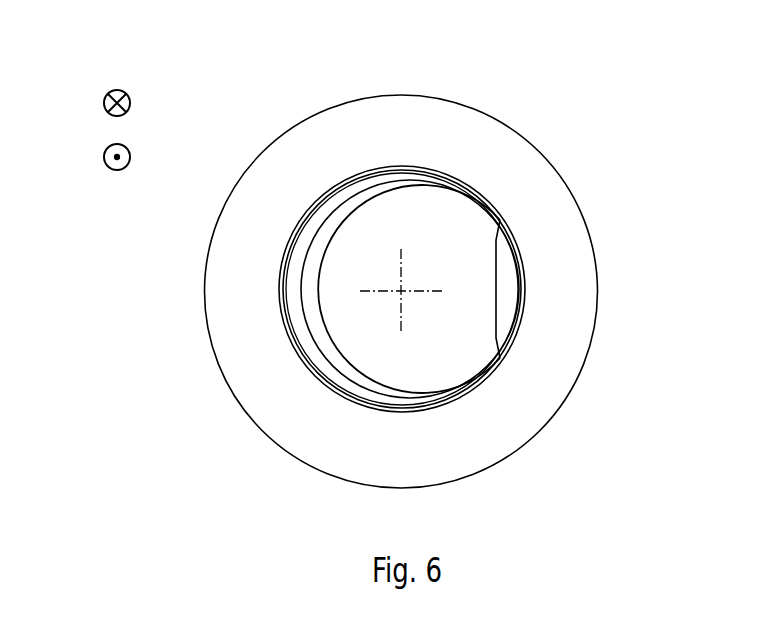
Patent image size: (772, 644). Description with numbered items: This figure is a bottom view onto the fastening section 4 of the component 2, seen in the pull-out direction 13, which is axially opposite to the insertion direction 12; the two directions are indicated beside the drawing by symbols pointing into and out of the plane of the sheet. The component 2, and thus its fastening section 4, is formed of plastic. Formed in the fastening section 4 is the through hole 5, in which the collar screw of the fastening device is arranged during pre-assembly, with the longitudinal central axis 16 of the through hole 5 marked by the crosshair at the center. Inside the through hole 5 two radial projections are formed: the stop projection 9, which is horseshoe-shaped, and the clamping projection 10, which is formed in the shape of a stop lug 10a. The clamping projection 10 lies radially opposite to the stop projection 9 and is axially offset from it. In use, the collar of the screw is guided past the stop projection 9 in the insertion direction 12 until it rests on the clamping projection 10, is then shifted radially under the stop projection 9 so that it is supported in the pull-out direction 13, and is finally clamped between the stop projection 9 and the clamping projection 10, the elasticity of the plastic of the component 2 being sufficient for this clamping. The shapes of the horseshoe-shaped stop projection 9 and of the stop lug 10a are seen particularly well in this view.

The component 2 is at (618, 176).
The fastening section 4 is at (401, 291).
The through hole 5 is at (452, 252).
The stop projection 9 is at (312, 284).
The clamping projection 10 is at (507, 292).
The stop lug 10a is at (402, 289).
The insertion direction 12 is at (104, 157).
The pull-out direction 13 is at (104, 103).
The longitudinal central axis of the through hole 16 is at (401, 291).